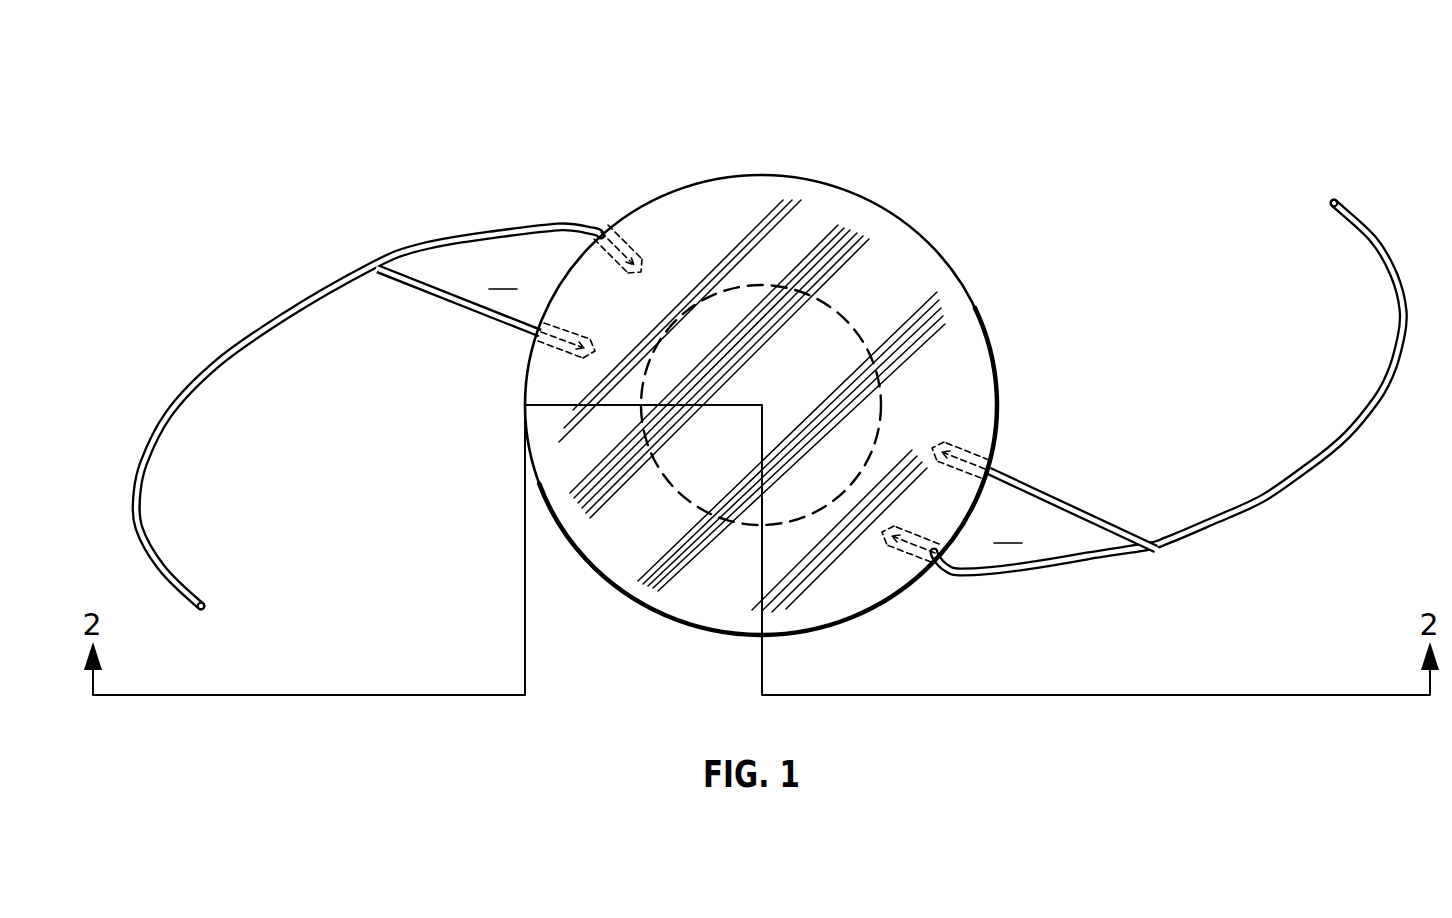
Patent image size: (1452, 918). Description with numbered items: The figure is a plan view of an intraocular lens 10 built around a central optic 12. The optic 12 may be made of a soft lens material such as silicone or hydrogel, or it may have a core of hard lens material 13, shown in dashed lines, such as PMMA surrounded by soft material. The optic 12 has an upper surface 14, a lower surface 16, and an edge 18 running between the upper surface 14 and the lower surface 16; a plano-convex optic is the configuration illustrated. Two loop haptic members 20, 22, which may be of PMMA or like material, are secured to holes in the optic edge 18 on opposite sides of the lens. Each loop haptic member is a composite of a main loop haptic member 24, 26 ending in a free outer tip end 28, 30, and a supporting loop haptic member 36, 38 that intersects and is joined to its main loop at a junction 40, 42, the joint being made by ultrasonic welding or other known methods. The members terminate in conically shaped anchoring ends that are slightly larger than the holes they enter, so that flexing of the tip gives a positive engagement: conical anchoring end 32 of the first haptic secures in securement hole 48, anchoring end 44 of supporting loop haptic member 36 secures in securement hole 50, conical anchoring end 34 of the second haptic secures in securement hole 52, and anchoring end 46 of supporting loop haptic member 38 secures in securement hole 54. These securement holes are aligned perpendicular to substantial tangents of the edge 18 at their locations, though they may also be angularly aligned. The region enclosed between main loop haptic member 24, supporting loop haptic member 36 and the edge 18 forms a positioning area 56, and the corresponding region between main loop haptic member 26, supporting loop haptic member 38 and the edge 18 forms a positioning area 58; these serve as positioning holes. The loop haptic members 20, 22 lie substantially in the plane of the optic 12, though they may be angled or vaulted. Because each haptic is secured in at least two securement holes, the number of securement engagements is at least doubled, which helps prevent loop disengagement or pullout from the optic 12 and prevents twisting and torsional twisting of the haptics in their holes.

The intraocular lens 10 is at (1066, 130).
The optic 12 is at (878, 222).
The hard lens material 13 is at (841, 313).
The upper surface 14 is at (900, 268).
The lower surface 16 is at (909, 313).
The edge 18 is at (980, 315).
The loop haptic member 20 is at (152, 347).
The loop haptic member 22 is at (1372, 522).
The main loop haptic member 24 is at (251, 313).
The main loop haptic member 26 is at (1302, 490).
The outer tip end 28 is at (205, 611).
The outer tip end 30 is at (1332, 201).
The conical anchoring end 32 is at (650, 262).
The conical anchoring end 34 is at (895, 526).
The supporting loop haptic member 36 is at (467, 311).
The supporting loop haptic member 38 is at (1059, 505).
The junction 40 is at (375, 260).
The junction 42 is at (1155, 541).
The anchoring end 44 is at (587, 340).
The anchoring end 46 is at (934, 447).
The securement hole 48 is at (628, 243).
The securement hole 50 is at (563, 327).
The securement hole 52 is at (907, 557).
The securement hole 54 is at (963, 450).
The positioning area 56 is at (502, 276).
The positioning area 58 is at (1007, 530).